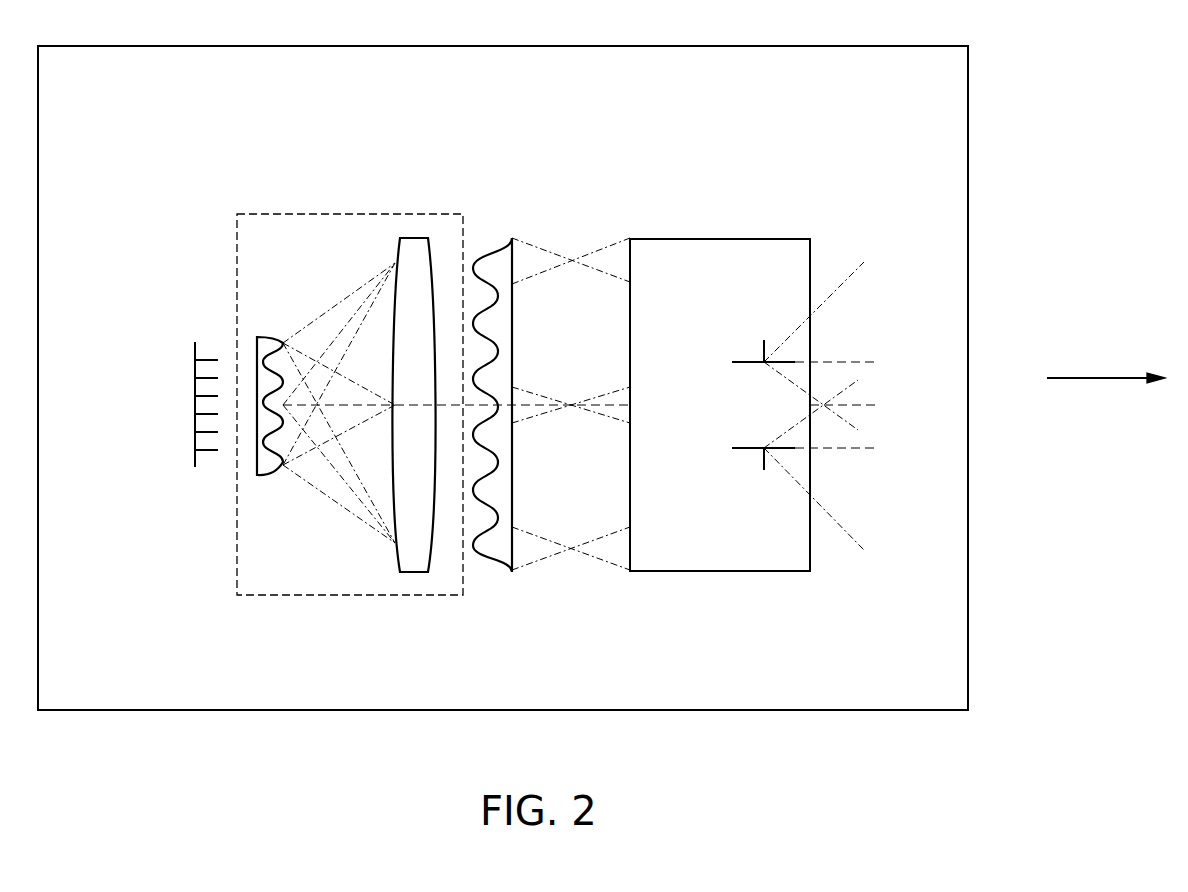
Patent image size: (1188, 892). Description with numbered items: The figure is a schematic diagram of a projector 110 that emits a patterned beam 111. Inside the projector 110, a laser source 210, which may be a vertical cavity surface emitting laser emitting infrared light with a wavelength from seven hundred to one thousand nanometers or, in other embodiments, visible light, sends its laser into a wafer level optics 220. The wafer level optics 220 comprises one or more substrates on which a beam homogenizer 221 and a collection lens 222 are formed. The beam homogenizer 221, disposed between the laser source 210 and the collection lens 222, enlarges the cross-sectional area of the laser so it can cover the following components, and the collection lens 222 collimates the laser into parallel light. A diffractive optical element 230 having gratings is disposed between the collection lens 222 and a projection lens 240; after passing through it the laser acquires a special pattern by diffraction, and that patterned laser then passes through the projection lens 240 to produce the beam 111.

The projector 110 is at (968, 680).
The beam 111 is at (1088, 378).
The laser source 210 is at (208, 463).
The wafer level optics 220 is at (355, 214).
The beam homogenizer 221 is at (270, 333).
The collection lens 222 is at (412, 238).
The diffractive optical element 230 is at (488, 248).
The projection lens 240 is at (713, 238).